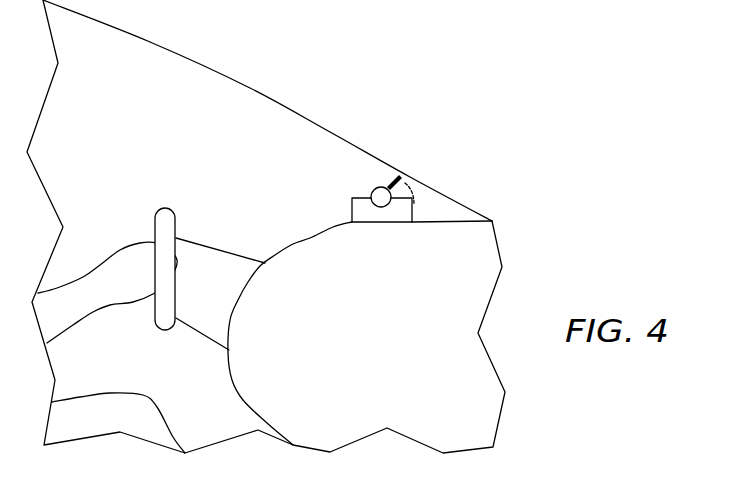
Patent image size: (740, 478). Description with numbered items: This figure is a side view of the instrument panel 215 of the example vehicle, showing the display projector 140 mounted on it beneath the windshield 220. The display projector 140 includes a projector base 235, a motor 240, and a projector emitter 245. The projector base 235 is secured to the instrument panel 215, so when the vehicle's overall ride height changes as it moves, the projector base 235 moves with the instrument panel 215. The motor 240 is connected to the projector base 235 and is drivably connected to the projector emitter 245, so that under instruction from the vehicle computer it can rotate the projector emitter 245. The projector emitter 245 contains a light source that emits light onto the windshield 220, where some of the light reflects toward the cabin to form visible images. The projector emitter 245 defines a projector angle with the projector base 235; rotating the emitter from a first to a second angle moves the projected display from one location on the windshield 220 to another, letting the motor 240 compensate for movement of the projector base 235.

The display projector 140 is at (321, 188).
The windshield 220 is at (205, 62).
The instrument panel 215 is at (300, 250).
The projector base 235 is at (365, 212).
The motor 240 is at (378, 188).
The projector emitter 245 is at (394, 180).